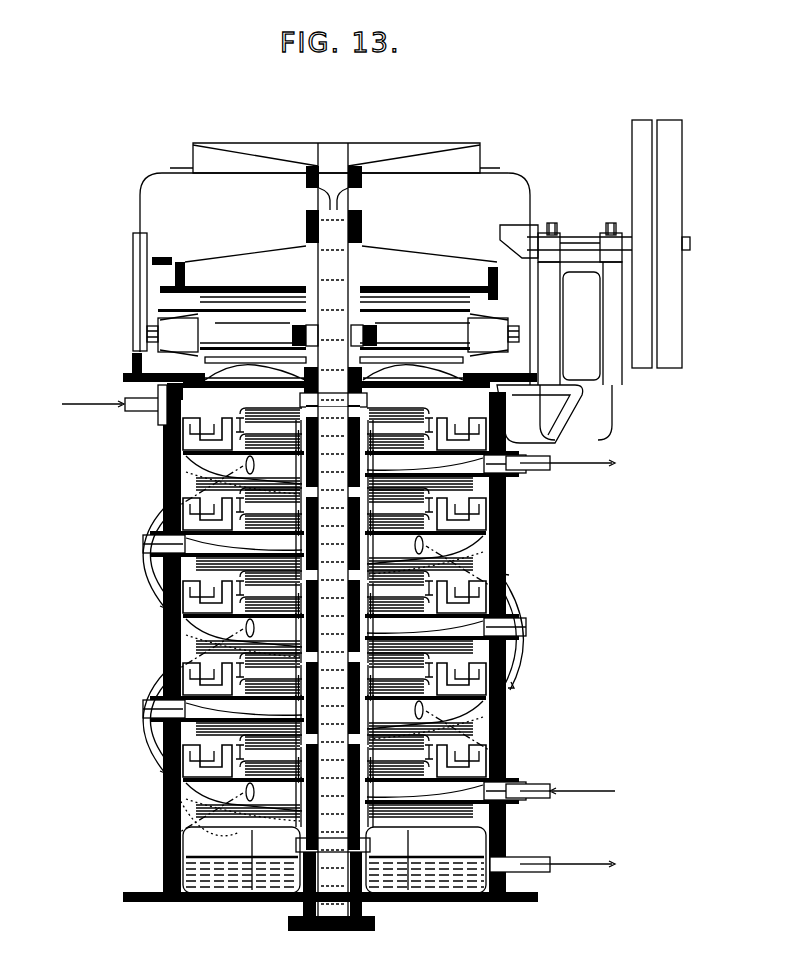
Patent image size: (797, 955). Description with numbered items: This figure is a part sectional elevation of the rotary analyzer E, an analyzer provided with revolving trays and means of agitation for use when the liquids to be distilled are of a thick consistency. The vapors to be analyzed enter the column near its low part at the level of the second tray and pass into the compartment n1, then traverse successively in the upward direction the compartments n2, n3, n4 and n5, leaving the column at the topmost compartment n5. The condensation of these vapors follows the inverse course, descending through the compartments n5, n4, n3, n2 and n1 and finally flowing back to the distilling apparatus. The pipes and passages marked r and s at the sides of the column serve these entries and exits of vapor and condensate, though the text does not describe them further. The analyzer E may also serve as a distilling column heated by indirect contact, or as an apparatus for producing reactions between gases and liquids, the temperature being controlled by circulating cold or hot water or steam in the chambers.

The compartment n1 is at (349, 786).
The compartment n2 is at (320, 704).
The compartment n3 is at (349, 622).
The compartment n4 is at (320, 539).
The compartment n5 is at (349, 459).
The analyzer E is at (345, 656).
The inlet/outlet pipe r is at (338, 628).
The connecting passage s is at (334, 636).